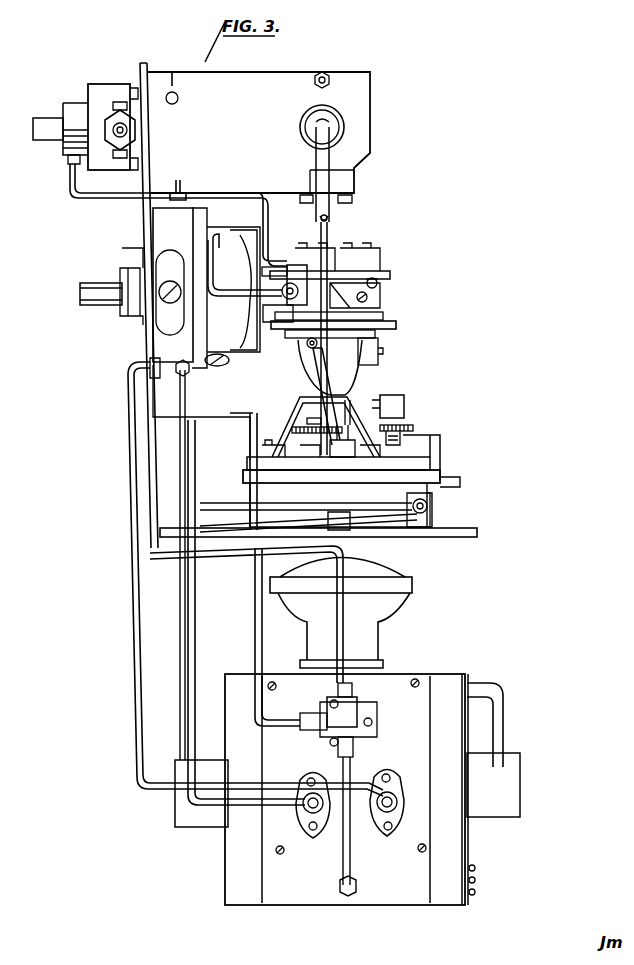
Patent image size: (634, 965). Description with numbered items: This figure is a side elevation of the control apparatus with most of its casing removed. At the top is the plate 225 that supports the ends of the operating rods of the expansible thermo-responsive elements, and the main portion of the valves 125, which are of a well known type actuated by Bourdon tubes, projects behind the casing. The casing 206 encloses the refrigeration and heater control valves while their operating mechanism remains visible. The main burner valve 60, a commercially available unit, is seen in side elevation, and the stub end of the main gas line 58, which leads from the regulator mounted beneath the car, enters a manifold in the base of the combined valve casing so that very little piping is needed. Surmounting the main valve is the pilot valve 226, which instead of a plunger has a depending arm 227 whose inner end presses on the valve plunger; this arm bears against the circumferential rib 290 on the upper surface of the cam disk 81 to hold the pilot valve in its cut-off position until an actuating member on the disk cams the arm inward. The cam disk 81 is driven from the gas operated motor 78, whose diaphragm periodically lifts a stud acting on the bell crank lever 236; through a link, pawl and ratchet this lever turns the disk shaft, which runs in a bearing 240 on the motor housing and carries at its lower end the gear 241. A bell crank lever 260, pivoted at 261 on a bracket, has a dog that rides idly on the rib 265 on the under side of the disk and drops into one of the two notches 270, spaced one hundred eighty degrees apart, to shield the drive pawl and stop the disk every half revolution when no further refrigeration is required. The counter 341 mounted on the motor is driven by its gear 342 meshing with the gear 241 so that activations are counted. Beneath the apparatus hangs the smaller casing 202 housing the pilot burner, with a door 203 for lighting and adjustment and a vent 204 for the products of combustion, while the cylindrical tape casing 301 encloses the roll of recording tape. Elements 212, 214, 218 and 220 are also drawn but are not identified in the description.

The main gas line 58 is at (88, 302).
The main burner valve 60 is at (197, 317).
The gas operated motor 78 is at (387, 493).
The cam disk 81 is at (355, 334).
The valves 125 is at (98, 97).
The second casing 202 is at (433, 685).
The door 203 is at (468, 728).
The vent 204 is at (387, 568).
The casing 206 is at (358, 284).
The pivot bearing 212 is at (322, 132).
The pin end 214 is at (333, 218).
The plate 218 is at (336, 275).
The rod 220 is at (335, 227).
The plate 225 is at (283, 82).
The pilot valve 226 is at (290, 262).
The depending arm 227 is at (332, 301).
The bell crank lever 236 is at (353, 457).
The bearing 240 is at (358, 368).
The gear 241 is at (290, 436).
The bell crank lever 260 is at (318, 356).
The pivot 261 is at (308, 343).
The rib 265 is at (375, 340).
The notches 270 is at (378, 350).
The circumferential rib 290 is at (345, 330).
The tape casing 301 is at (432, 446).
The counter 341 is at (403, 400).
The counter gear 342 is at (413, 427).